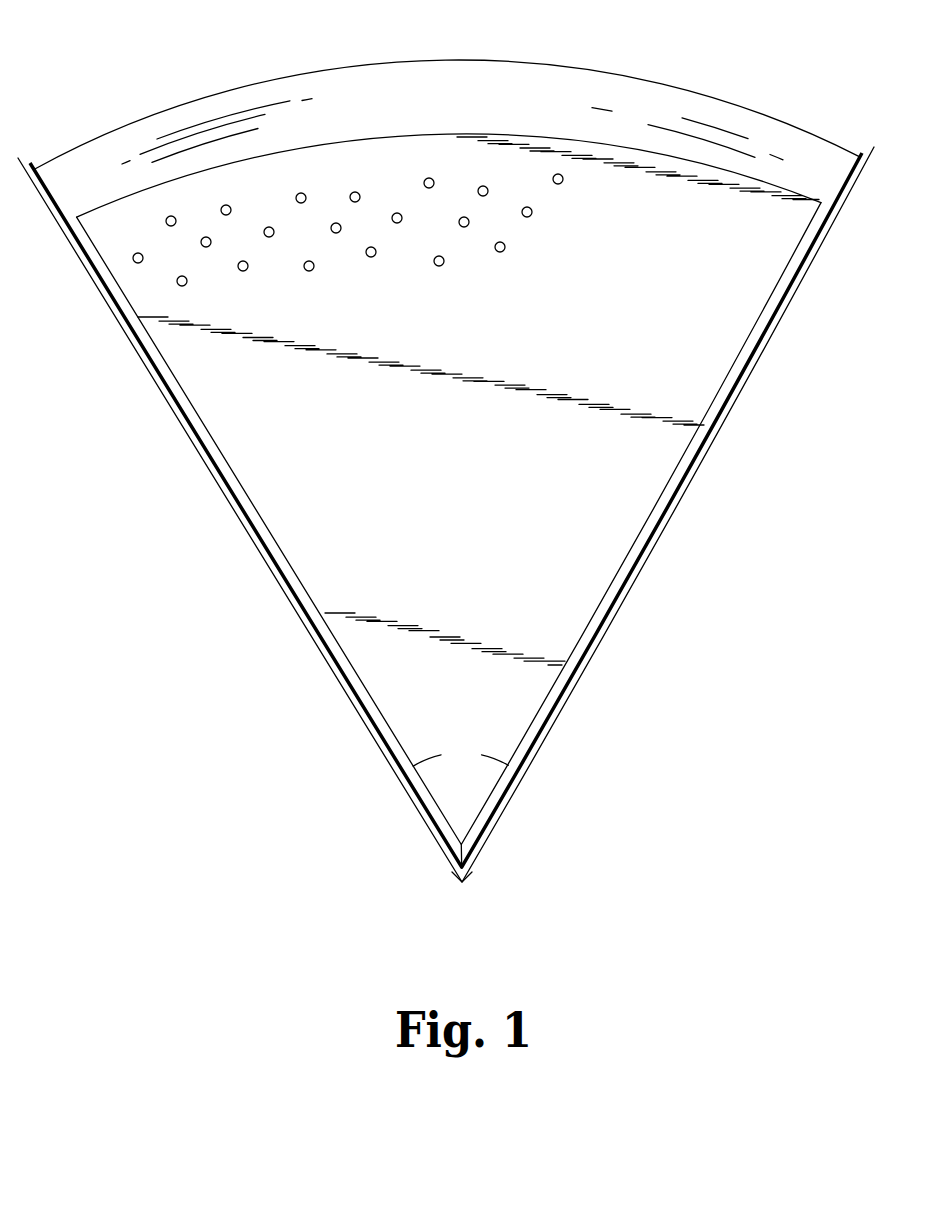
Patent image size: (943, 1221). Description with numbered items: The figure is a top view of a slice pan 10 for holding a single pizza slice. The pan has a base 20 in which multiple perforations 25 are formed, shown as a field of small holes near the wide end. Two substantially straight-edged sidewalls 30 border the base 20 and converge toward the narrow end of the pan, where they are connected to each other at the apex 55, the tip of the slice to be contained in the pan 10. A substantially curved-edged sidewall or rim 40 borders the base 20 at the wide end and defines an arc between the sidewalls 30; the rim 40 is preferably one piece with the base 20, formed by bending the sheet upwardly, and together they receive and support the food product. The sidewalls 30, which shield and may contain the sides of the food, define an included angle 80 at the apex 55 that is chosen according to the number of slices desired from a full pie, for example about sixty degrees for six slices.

The slice pan 10 is at (206, 57).
The base 20 is at (467, 586).
The perforations 25 is at (444, 264).
The substantially straight-edged sidewalls 30 is at (209, 472).
The rim 40 is at (388, 82).
The apex 55 is at (451, 893).
The included angle 80 is at (460, 750).